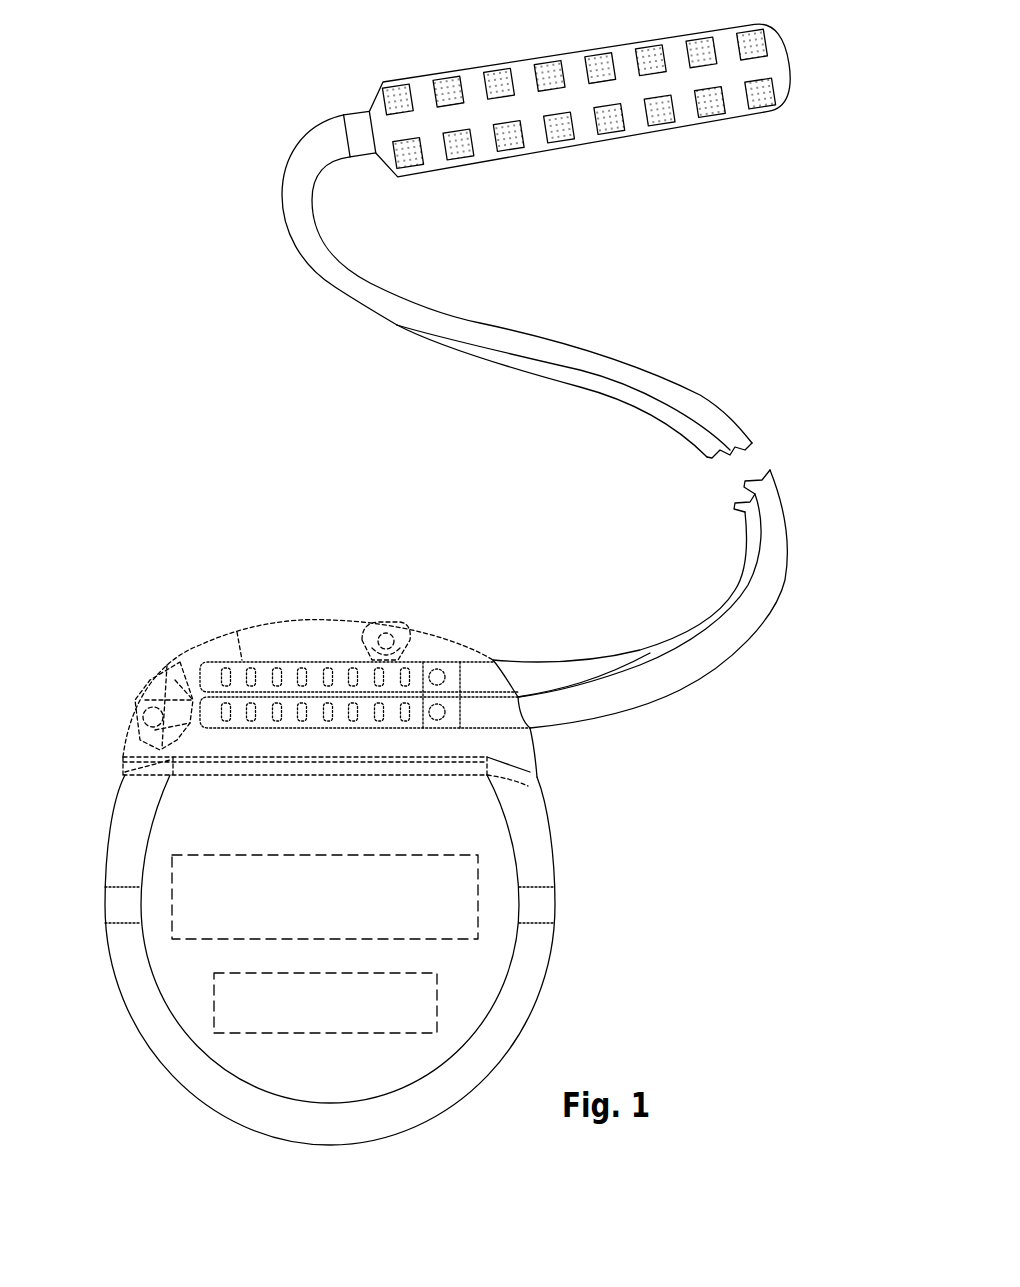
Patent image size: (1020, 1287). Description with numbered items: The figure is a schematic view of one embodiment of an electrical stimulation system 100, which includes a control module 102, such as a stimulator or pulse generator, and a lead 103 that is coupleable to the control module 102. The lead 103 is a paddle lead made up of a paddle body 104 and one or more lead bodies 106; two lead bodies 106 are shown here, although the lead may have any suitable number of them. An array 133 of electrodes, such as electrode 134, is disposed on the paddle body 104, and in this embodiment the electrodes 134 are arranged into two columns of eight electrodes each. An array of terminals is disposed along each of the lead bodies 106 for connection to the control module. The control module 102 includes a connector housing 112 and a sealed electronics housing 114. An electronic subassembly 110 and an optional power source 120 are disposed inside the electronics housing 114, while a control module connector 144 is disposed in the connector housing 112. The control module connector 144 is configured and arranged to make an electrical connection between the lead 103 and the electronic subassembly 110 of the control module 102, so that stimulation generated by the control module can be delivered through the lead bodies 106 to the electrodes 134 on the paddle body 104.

The electrical stimulation system 100 is at (135, 140).
The control module 102 is at (150, 648).
The lead 103 is at (712, 340).
The paddle body 104 is at (770, 64).
The lead bodies 106 is at (620, 357).
The electronic subassembly 110 is at (188, 902).
The connector housing 112 is at (305, 627).
The electronics housing 114 is at (172, 829).
The power source 120 is at (232, 1006).
The array of electrodes 133 is at (393, 101).
The electrode 134 is at (549, 76).
The control module connector 144 is at (412, 662).